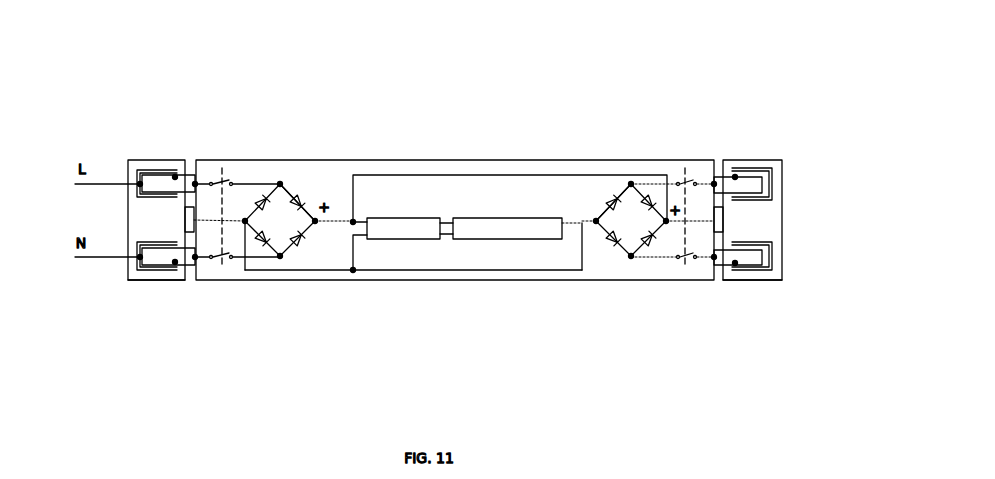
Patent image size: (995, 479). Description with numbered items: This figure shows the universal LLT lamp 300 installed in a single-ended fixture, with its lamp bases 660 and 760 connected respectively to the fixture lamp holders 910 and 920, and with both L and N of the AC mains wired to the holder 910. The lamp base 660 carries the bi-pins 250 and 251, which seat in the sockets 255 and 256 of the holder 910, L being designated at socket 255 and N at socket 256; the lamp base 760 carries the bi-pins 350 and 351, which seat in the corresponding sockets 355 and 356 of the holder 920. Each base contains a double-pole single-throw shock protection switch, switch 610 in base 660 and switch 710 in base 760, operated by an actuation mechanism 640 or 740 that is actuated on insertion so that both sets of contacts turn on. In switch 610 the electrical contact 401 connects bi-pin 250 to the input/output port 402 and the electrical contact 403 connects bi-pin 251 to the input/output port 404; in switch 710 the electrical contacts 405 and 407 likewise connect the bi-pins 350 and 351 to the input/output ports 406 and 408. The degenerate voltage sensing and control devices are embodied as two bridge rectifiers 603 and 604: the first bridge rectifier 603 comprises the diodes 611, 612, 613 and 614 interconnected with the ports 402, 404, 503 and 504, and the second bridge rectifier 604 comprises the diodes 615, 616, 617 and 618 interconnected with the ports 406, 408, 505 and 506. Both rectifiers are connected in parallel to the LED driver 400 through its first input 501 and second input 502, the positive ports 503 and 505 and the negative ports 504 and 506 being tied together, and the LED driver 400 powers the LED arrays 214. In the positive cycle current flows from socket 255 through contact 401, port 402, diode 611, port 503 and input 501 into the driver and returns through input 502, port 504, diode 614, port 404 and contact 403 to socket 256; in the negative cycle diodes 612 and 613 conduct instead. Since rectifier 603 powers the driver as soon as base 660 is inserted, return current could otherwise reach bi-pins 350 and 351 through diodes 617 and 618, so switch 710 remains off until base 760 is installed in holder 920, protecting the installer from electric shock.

The universal LLT lamp 300 is at (432, 146).
The lamp base 660 is at (201, 141).
The lamp base 760 is at (696, 140).
The fixture lamp holder 910 is at (148, 295).
The fixture lamp holder 920 is at (736, 296).
The bi-pin 250 is at (151, 171).
The socket 255 is at (160, 173).
The bi-pin 251 is at (163, 258).
The socket 256 is at (175, 265).
The electrical contact 401 is at (189, 206).
The actuation mechanism 640 is at (193, 223).
The shock protection switch 610 is at (222, 167).
The electrical contact 403 is at (197, 260).
The input/output port 402 is at (278, 182).
The diode 613 is at (260, 200).
The diode 611 is at (305, 200).
The bridge rectifier 603 is at (298, 176).
The diode 614 is at (261, 243).
The diode 612 is at (298, 243).
The input/output port 404 is at (280, 259).
The negative input/output port 504 is at (245, 218).
The positive input/output port 503 is at (317, 224).
The first input 501 is at (355, 219).
The second input 502 is at (354, 272).
The LED driver 400 is at (421, 241).
The LED arrays 214 is at (506, 241).
The negative input/output port 506 is at (594, 219).
The input/output port 406 is at (630, 182).
The diode 617 is at (610, 203).
The bridge rectifier 604 is at (606, 180).
The diode 615 is at (647, 199).
The diode 618 is at (611, 244).
The diode 616 is at (650, 244).
The input/output port 408 is at (630, 259).
The positive input/output port 505 is at (668, 259).
The electrical contact 407 is at (713, 261).
The shock protection switch 710 is at (684, 168).
The electrical contact 405 is at (716, 182).
The bi-pin 350 is at (748, 186).
The socket 355 is at (771, 170).
The bi-pin 351 is at (735, 245).
The actuation mechanism 740 is at (750, 264).
The fourth pin contact 356 is at (737, 266).